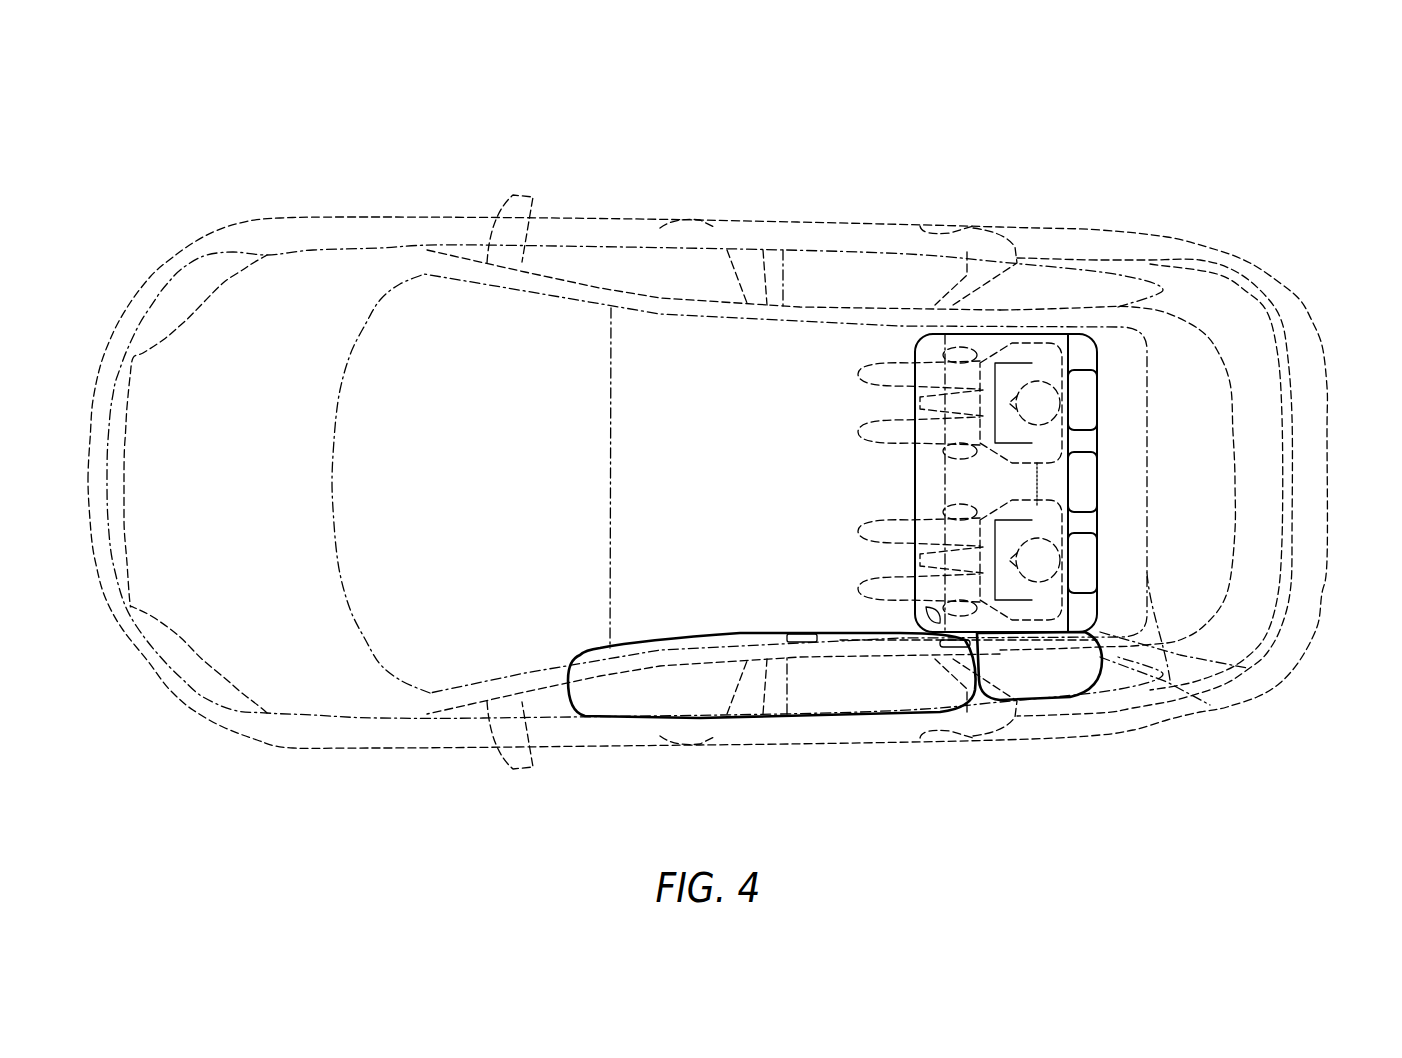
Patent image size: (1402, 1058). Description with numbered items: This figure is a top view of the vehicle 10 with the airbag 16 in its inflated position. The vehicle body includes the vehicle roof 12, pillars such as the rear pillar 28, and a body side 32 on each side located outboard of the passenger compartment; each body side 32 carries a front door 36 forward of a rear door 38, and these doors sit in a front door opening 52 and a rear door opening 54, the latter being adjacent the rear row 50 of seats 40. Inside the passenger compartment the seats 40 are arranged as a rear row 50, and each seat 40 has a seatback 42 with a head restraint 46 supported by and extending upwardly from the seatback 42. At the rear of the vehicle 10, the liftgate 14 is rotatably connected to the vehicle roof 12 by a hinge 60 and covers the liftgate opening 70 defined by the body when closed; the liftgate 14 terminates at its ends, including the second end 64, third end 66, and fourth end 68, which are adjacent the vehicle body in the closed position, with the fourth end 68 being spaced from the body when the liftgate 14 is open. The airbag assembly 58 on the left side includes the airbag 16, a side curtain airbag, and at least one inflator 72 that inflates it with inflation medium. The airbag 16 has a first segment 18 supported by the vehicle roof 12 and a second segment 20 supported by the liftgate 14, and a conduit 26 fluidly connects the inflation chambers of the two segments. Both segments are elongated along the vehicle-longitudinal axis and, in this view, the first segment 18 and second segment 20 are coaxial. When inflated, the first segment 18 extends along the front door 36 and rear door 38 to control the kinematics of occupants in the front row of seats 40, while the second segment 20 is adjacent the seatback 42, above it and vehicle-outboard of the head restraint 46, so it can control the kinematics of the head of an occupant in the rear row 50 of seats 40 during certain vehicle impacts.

The vehicle 10 is at (995, 108).
The vehicle roof 12 is at (687, 373).
The liftgate 14 is at (1296, 417).
The airbag 16 is at (846, 725).
The first segment 18 is at (797, 720).
The second segment 20 is at (1090, 685).
The conduit 26 is at (921, 613).
The rear pillar 28 is at (1063, 320).
The body side 32 is at (1201, 231).
The front door 36 is at (620, 240).
The rear door 38 is at (885, 235).
The seat 40 is at (1114, 402).
The seatback 42 is at (1097, 522).
The head restraint 46 is at (1097, 565).
The rear row 50 is at (1019, 309).
The front door opening 52 is at (577, 240).
The rear door opening 54 is at (815, 300).
The airbag assembly 58 is at (774, 618).
The hinge 60 is at (940, 403).
The second end 64 is at (1173, 640).
The third end 66 is at (1122, 323).
The fourth end 68 is at (1329, 474).
The liftgate opening 70 is at (1141, 631).
The inflator 72 is at (806, 634).